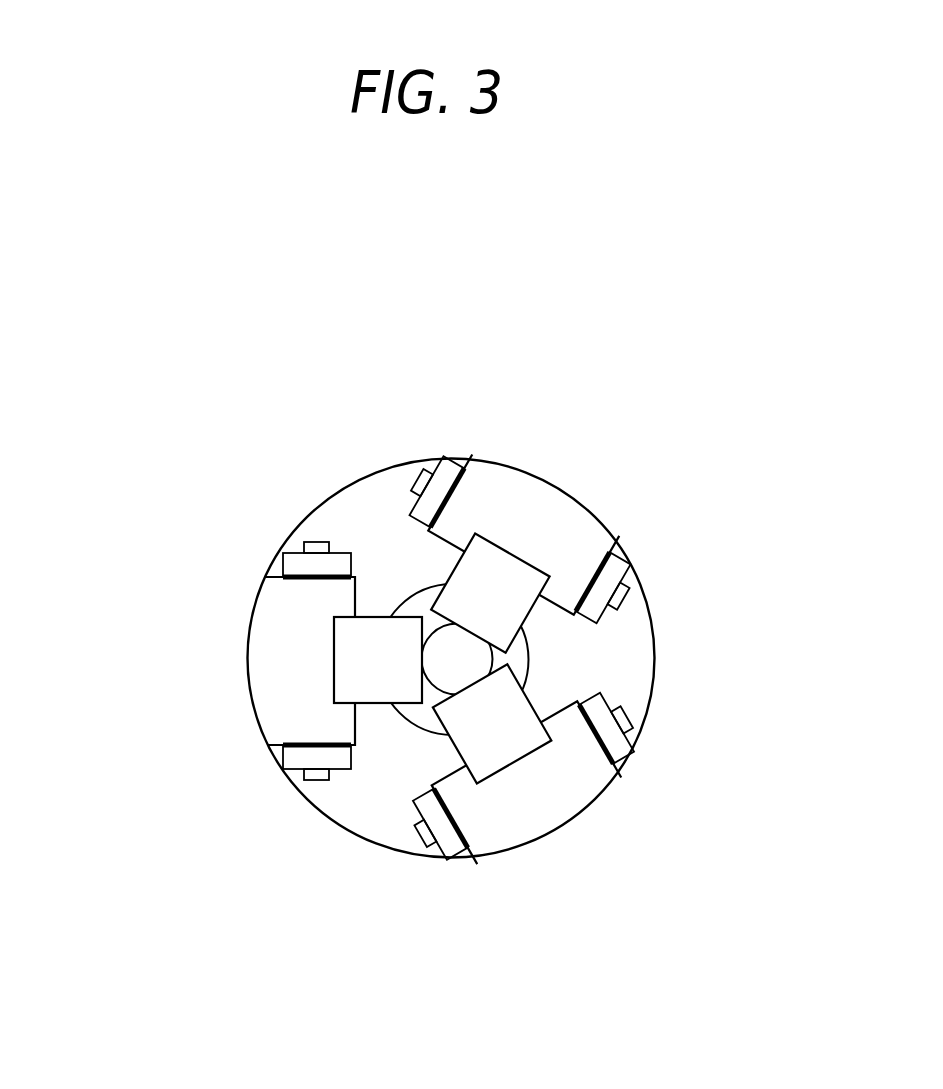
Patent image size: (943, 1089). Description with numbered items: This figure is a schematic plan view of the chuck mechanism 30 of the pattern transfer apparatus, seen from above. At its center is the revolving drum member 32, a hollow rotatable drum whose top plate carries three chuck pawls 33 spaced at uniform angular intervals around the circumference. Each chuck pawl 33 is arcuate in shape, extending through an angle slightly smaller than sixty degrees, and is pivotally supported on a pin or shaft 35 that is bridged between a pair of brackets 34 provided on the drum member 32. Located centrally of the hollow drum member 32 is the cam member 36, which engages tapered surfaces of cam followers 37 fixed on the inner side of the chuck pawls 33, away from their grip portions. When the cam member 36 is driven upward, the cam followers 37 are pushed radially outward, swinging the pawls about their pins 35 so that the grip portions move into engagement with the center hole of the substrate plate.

The chuck mechanism 30 is at (533, 452).
The revolving drum member 32 is at (373, 533).
The chuck pawl 33 is at (577, 522).
The bracket 34 is at (445, 476).
The pin or shaft 35 is at (317, 548).
The cam member 36 is at (425, 710).
The cam follower 37 is at (488, 587).